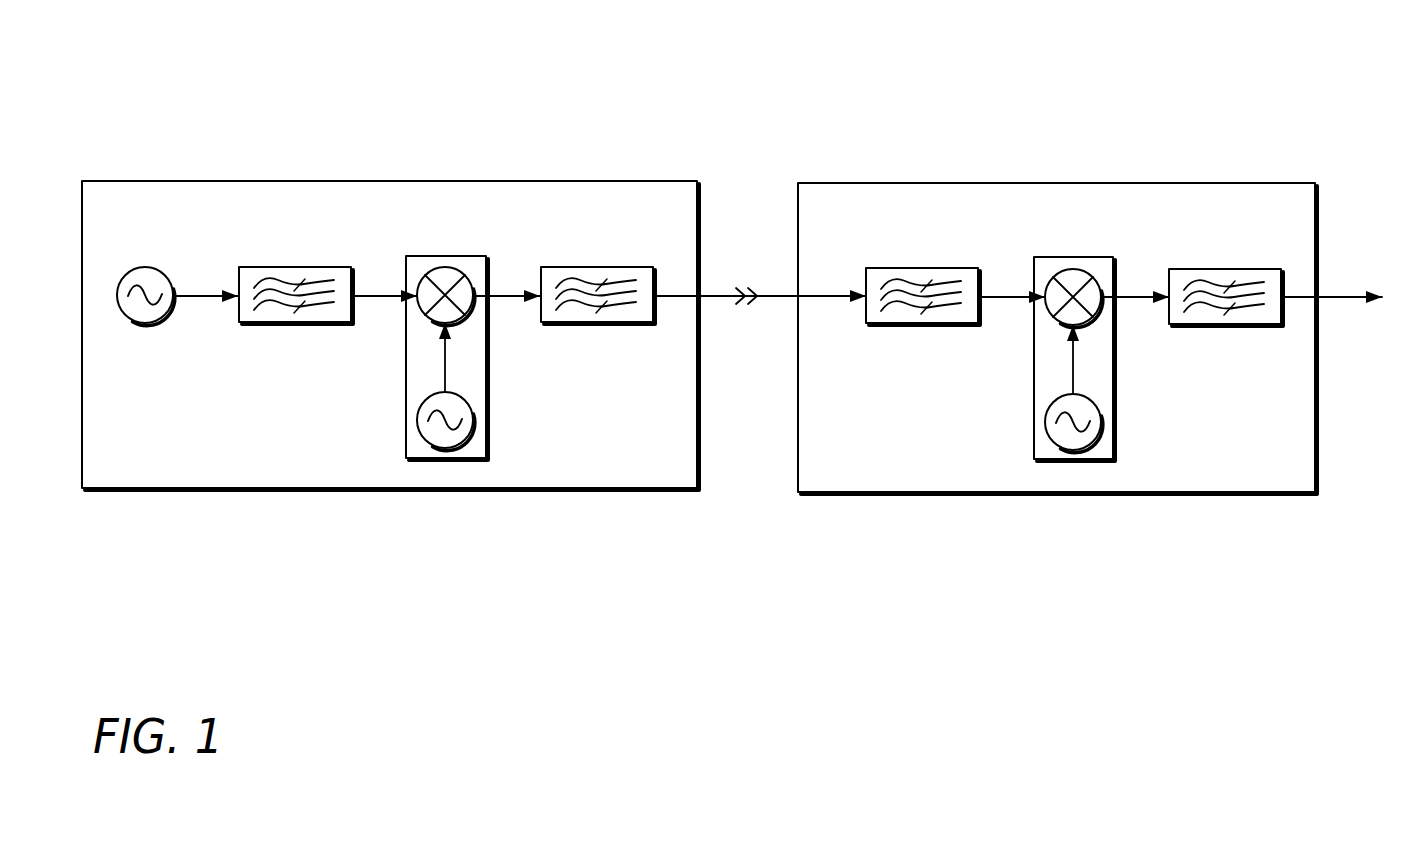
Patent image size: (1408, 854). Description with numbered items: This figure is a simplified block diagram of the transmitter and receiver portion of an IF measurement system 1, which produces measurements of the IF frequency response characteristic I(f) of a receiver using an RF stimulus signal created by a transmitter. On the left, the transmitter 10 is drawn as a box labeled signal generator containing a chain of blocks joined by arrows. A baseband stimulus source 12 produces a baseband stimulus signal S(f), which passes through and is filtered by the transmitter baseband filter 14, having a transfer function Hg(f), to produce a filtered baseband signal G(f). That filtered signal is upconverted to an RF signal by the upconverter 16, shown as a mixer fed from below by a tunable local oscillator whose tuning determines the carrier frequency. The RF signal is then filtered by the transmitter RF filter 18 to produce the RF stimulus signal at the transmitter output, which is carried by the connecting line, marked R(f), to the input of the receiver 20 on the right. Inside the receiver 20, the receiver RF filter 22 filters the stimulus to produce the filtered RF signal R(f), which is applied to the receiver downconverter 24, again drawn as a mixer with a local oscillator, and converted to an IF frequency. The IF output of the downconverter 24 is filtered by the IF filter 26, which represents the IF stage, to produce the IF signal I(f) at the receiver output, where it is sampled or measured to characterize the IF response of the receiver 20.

The IF measurement system 1 is at (293, 72).
The transmitter 10 is at (183, 190).
The baseband stimulus source 12 is at (146, 323).
The transmitter baseband filter 14 is at (295, 321).
The upconverter 16 is at (478, 373).
The transmitter RF filter 18 is at (597, 318).
The receiver 20 is at (900, 190).
The receiver RF filter 22 is at (923, 321).
The receiver downconverter 24 is at (1107, 377).
The IF filter 26 is at (1225, 320).